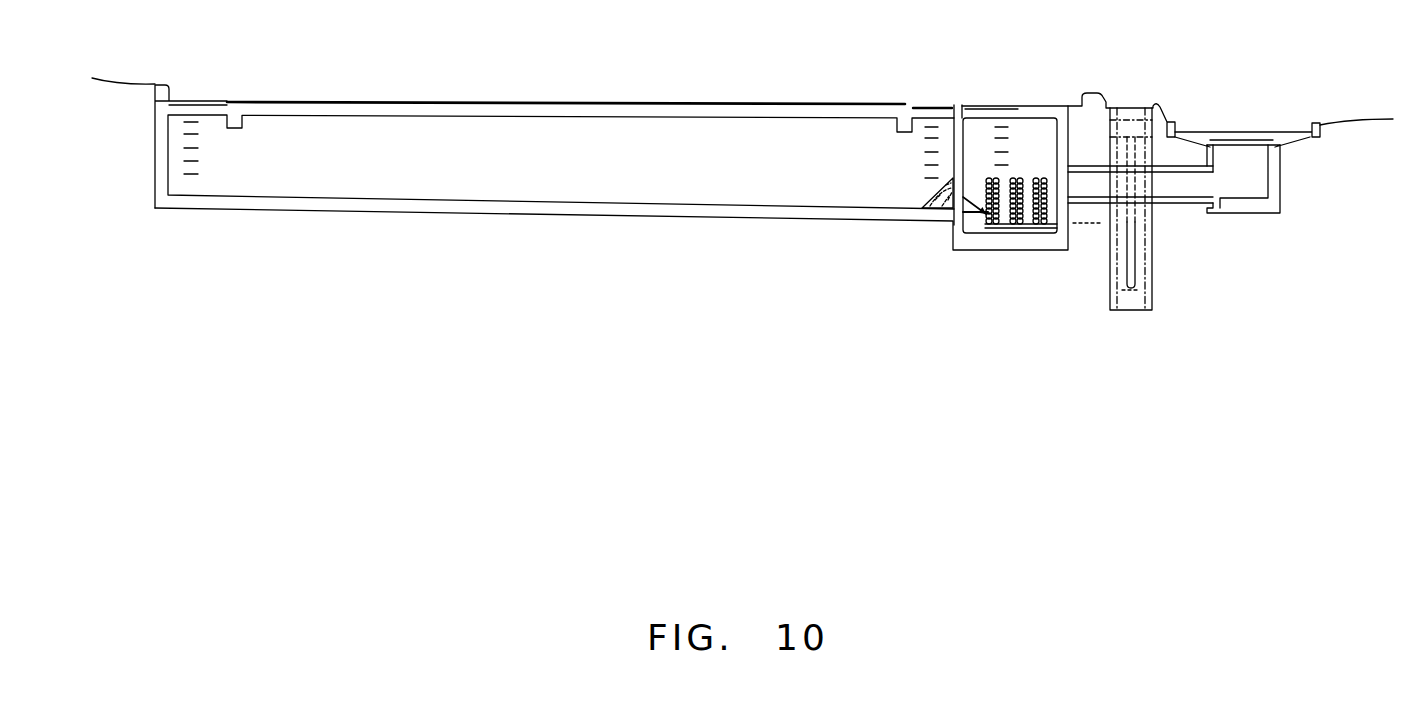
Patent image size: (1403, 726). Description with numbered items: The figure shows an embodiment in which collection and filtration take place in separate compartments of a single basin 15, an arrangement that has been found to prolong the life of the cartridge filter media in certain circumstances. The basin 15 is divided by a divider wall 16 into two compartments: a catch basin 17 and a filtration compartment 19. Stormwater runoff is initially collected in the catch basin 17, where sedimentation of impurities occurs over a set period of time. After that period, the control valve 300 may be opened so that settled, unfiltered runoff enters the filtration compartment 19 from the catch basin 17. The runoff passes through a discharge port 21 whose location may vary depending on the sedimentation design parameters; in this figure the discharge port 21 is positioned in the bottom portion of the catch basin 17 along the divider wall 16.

The basin 15 is at (477, 101).
The divider wall 16 is at (958, 150).
The catch basin 17 is at (525, 178).
The filtration compartment 19 is at (1025, 140).
The discharge port 21 is at (947, 210).
The control valve 300 is at (978, 224).